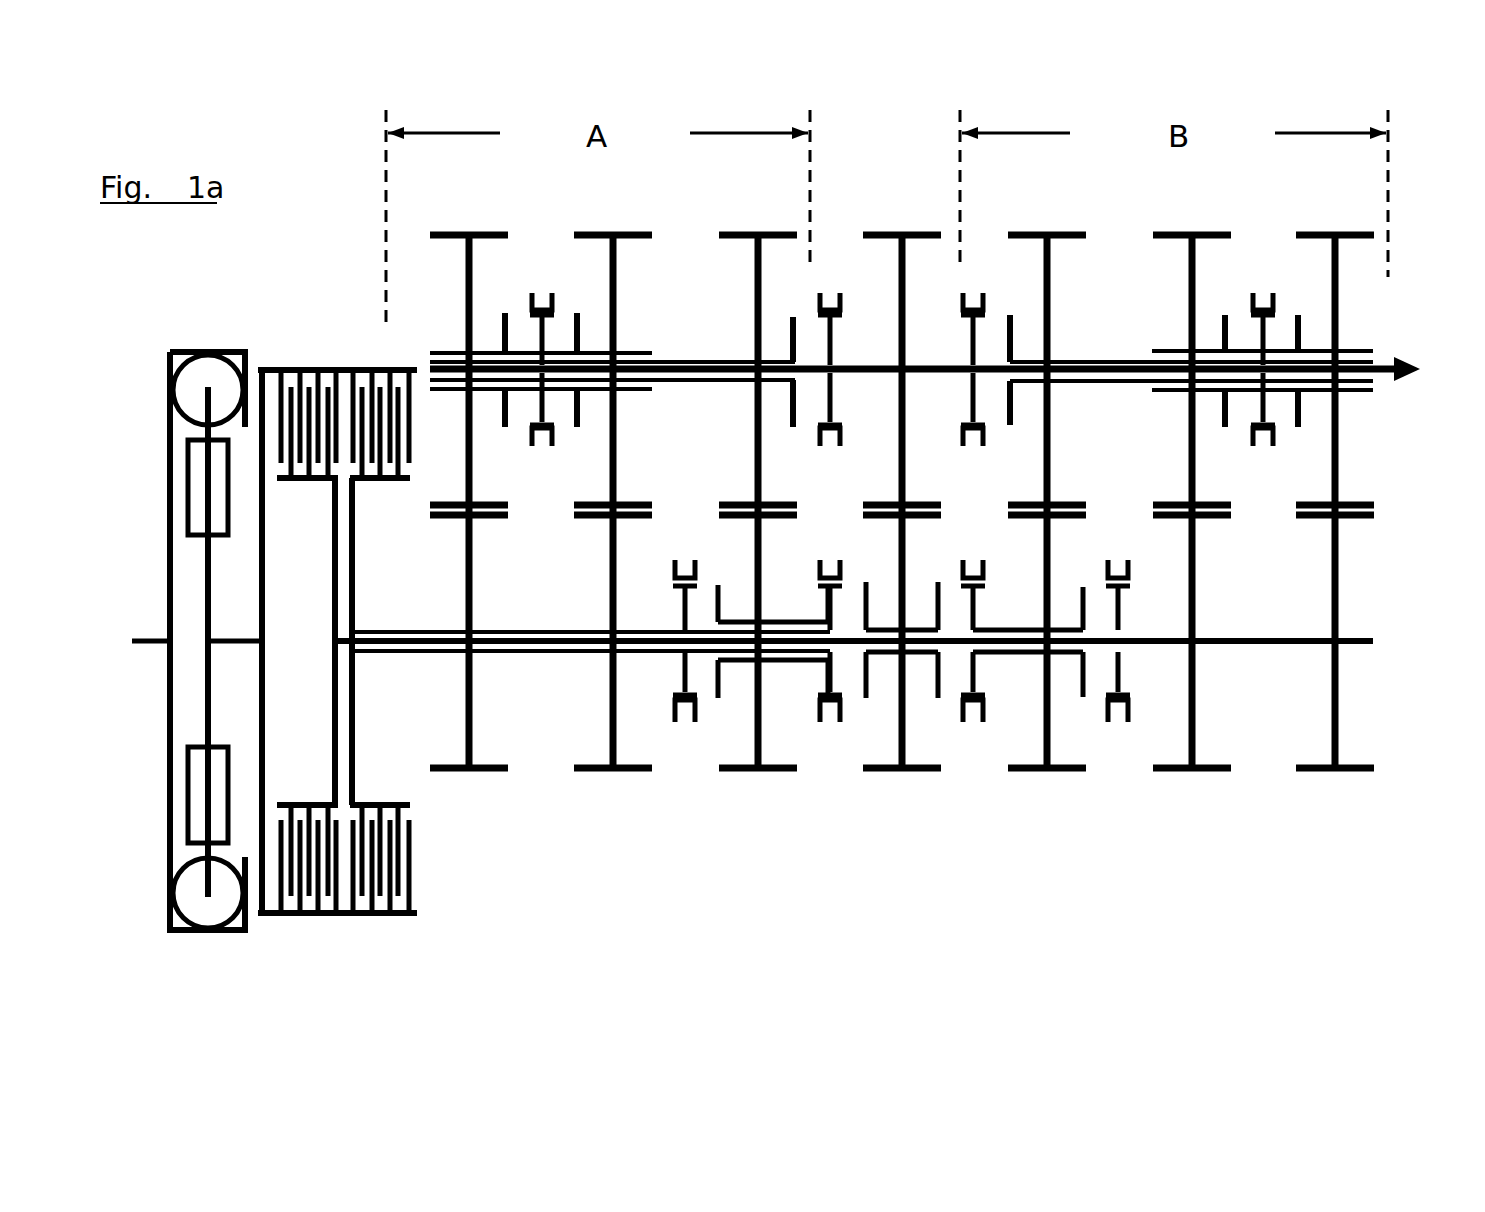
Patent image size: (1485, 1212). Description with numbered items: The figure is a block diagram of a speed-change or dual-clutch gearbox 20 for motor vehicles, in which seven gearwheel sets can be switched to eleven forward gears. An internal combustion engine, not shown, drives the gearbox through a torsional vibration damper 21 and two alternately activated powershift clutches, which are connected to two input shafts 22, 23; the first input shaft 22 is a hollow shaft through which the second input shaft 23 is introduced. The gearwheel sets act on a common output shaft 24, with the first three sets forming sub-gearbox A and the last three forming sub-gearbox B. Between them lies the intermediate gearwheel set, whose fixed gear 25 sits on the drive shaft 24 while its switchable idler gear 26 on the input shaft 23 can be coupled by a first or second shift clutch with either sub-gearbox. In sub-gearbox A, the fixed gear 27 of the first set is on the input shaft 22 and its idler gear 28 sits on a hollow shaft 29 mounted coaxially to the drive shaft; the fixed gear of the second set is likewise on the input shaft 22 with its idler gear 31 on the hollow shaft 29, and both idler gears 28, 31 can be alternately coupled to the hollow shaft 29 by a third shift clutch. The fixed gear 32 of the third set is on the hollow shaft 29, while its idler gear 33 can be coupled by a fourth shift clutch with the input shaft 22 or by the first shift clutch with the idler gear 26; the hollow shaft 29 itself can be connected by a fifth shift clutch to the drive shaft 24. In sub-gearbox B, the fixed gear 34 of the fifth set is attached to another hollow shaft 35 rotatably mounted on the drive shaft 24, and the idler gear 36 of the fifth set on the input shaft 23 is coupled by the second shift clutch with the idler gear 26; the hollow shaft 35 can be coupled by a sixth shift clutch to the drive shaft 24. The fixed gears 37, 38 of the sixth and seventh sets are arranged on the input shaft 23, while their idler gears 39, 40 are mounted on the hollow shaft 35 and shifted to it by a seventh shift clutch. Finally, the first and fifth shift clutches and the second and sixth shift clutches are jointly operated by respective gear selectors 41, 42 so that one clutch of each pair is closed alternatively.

The dual-clutch gearbox 20 is at (904, 551).
The torsional vibration damper 21 is at (180, 932).
The input shaft 22 is at (413, 652).
The input shaft 23 is at (1275, 638).
The output shaft 24 is at (1387, 362).
The fixed gear 25 is at (935, 240).
The idler gear 26 is at (925, 773).
The fixed gear 27 is at (505, 765).
The idler gear 28 is at (497, 235).
The hollow shaft 29 is at (700, 352).
The idler gear 31 is at (640, 236).
The fixed gear 32 is at (754, 460).
The idler gear 33 is at (787, 770).
The fixed gear 34 is at (1073, 236).
The hollow shaft 35 is at (1122, 358).
The idler gear 36 is at (1068, 770).
The fixed gear 37 is at (1197, 727).
The fixed gear 38 is at (1337, 707).
The idler gear 39 is at (1218, 234).
The idler gear 40 is at (1350, 240).
The gear selector 41 is at (832, 475).
The gear selector 42 is at (973, 475).